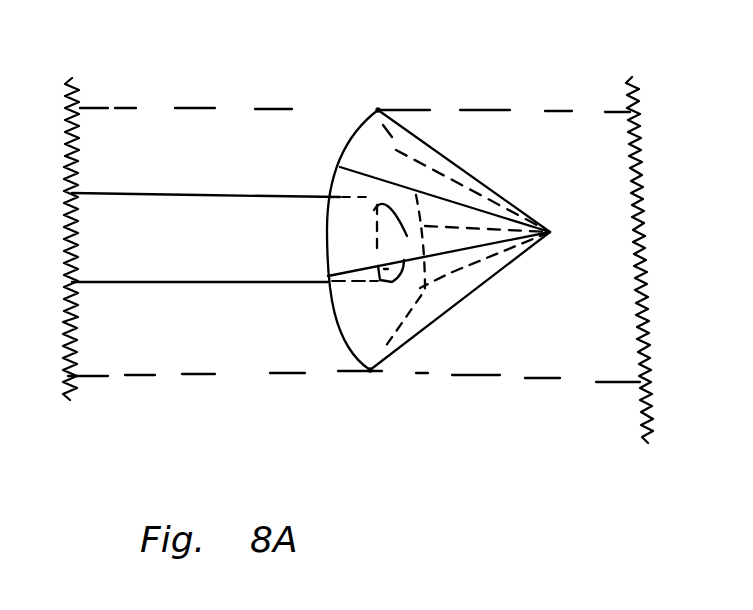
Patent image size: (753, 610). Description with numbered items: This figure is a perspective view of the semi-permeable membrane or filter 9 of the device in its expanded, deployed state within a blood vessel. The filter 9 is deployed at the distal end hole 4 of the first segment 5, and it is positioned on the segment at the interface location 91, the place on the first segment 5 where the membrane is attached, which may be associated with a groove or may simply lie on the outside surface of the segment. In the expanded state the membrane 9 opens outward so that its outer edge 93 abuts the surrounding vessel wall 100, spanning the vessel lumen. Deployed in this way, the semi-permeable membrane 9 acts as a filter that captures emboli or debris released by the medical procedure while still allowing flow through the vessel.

The distal end hole 4 is at (384, 242).
The first segment 5 is at (105, 202).
The semi-permeable membrane 9 is at (386, 158).
The interface location 91 is at (323, 240).
The outer edge 93 is at (378, 110).
The vessel wall 100 is at (115, 105).